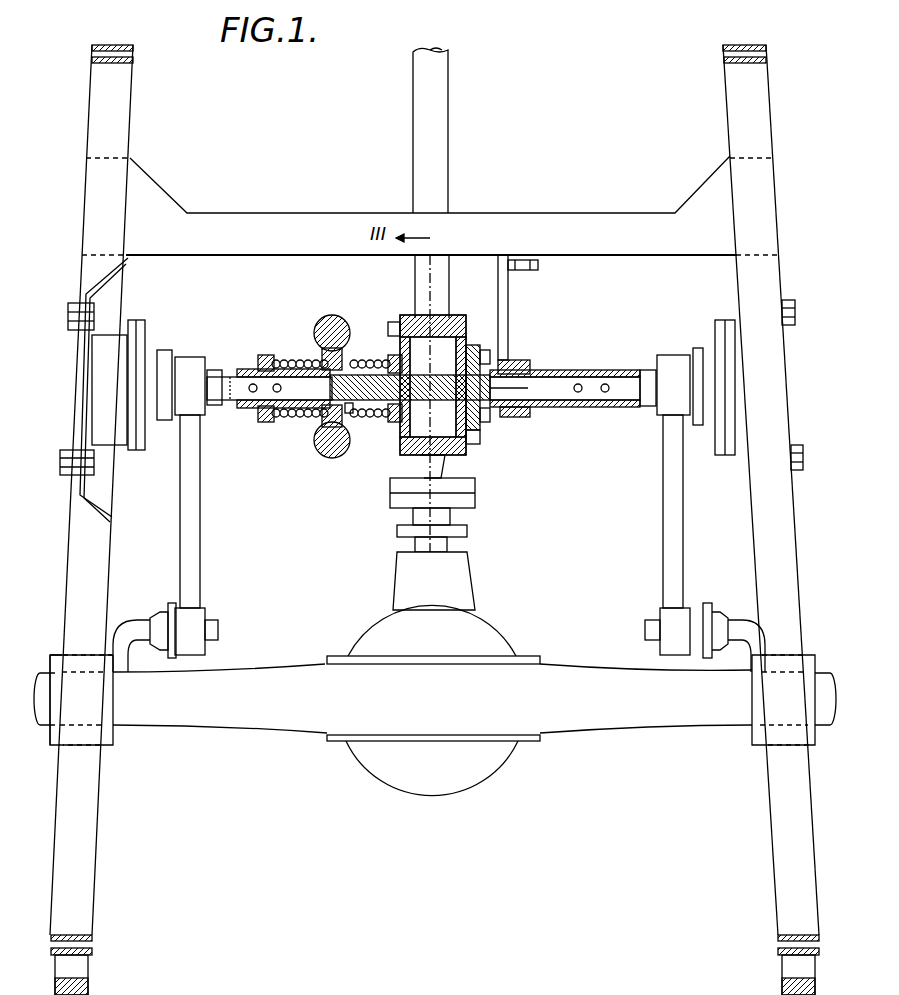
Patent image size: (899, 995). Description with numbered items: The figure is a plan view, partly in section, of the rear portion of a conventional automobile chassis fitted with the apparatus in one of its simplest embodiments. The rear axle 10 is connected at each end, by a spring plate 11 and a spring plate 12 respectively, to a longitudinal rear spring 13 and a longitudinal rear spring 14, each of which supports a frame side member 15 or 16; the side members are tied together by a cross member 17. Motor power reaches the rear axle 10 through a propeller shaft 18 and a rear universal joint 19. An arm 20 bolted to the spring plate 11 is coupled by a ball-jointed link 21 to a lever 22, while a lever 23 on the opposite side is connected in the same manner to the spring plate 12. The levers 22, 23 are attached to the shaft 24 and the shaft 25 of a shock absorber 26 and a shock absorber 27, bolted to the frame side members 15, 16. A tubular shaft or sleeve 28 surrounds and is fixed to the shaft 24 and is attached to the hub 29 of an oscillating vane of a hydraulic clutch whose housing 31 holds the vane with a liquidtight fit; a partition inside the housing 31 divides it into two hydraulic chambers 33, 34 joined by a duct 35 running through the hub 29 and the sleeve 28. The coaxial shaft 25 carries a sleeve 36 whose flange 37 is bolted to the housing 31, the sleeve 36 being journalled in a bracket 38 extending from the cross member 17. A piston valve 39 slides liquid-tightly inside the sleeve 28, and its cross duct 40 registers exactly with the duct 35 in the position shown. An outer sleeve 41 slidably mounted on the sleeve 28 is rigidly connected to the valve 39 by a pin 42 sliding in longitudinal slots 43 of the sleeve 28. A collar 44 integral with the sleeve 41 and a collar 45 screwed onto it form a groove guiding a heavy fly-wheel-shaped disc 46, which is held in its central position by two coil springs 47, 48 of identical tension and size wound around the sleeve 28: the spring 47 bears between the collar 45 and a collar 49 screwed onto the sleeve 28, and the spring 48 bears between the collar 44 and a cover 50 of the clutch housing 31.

The rear axle 10 is at (338, 700).
The spring plate 11 is at (110, 742).
The spring plate 12 is at (758, 735).
The longitudinal rear spring 13 is at (72, 970).
The longitudinal rear spring 14 is at (800, 970).
The frame side member 15 is at (72, 856).
The frame side member 16 is at (790, 800).
The cross member 17 is at (585, 225).
The propeller shaft 18 is at (432, 103).
The rear universal joint 19 is at (460, 470).
The arm 20 is at (128, 645).
The ball-jointed link 21 is at (160, 618).
The lever 22 is at (192, 568).
The lever 23 is at (685, 557).
The shaft 24 is at (230, 392).
The shaft 25 is at (628, 385).
The shock absorber 26 is at (112, 378).
The shock absorber 27 is at (730, 385).
The tubular shaft or sleeve 28 is at (250, 406).
The hub 29 is at (388, 452).
The housing 31 is at (460, 500).
The hydraulic chamber 33 is at (446, 332).
The hydraulic chamber 34 is at (410, 470).
The duct 35 is at (413, 330).
The sleeve 36 is at (590, 408).
The flange 37 is at (475, 428).
The bracket 38 is at (505, 320).
The piston valve 39 is at (565, 389).
The cross duct 40 is at (472, 348).
The outer sleeve 41 is at (352, 360).
The pin 42 is at (318, 340).
The longitudinal slots 43 is at (298, 358).
The collar 44 is at (350, 422).
The collar 45 is at (268, 418).
The fly-wheel-shaped disc 46 is at (326, 448).
The coil spring 47 is at (293, 412).
The coil spring 48 is at (392, 420).
The collar 49 is at (262, 355).
The cover 50 is at (398, 326).